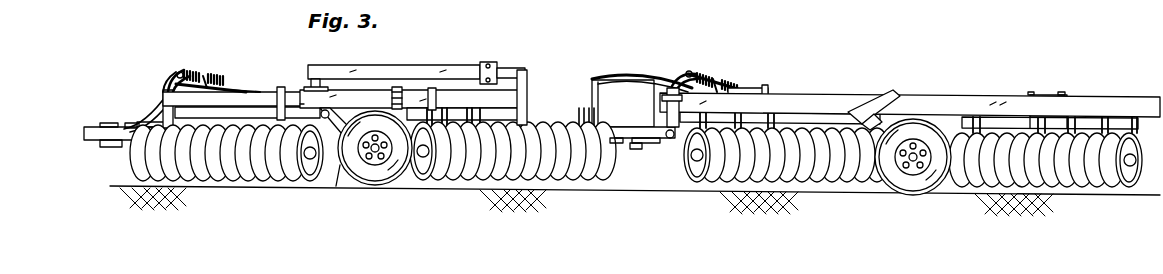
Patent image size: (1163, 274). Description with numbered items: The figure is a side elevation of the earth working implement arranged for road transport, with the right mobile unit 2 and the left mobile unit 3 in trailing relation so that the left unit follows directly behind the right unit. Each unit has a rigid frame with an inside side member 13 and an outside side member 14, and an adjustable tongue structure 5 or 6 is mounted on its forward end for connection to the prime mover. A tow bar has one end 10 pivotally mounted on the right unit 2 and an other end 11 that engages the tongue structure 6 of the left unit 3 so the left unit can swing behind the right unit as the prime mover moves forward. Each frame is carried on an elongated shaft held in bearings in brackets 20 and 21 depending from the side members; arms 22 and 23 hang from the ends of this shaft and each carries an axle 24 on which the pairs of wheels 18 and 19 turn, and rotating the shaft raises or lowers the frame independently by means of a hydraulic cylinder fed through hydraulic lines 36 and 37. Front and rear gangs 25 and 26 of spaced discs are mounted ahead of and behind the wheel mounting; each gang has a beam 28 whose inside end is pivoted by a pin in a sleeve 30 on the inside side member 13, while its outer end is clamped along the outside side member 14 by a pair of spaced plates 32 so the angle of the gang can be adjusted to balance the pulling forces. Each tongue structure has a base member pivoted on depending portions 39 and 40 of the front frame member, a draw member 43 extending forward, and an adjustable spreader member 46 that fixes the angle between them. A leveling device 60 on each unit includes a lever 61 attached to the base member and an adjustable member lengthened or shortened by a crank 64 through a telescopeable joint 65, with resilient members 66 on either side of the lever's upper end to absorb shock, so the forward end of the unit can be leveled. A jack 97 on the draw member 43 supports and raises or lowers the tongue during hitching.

The right mobile unit 2 is at (372, 82).
The left mobile unit 3 is at (855, 66).
The tongue structure 5 is at (86, 126).
The tongue structure 6 is at (662, 128).
The one end of tow bar 10 is at (313, 74).
The other end of tow bar 11 is at (528, 90).
The inside side member 13 is at (170, 89).
The outside side member 14 is at (968, 98).
The wheels 18 is at (930, 190).
The wheels 19 is at (391, 160).
The bracket 20 is at (311, 160).
The bracket 21 is at (885, 110).
The arm 22 is at (878, 118).
The arm 23 is at (340, 165).
The axle 24 is at (421, 158).
The front gang 25 is at (281, 176).
The rear gang 26 is at (436, 182).
The beam 28 is at (563, 110).
The sleeve 30 is at (279, 100).
The plates 32 is at (760, 92).
The hydraulic line 36 is at (141, 110).
The hydraulic line 37 is at (176, 80).
The depending portion 39 is at (650, 80).
The depending portion 40 is at (150, 110).
The draw member 43 is at (96, 142).
The spreader member 46 is at (637, 149).
The leveling device 60 is at (223, 78).
The lever 61 is at (178, 72).
The crank 64 is at (190, 68).
The telescopeable joint 65 is at (258, 63).
The resilient members 66 is at (202, 77).
The jack 97 is at (448, 48).